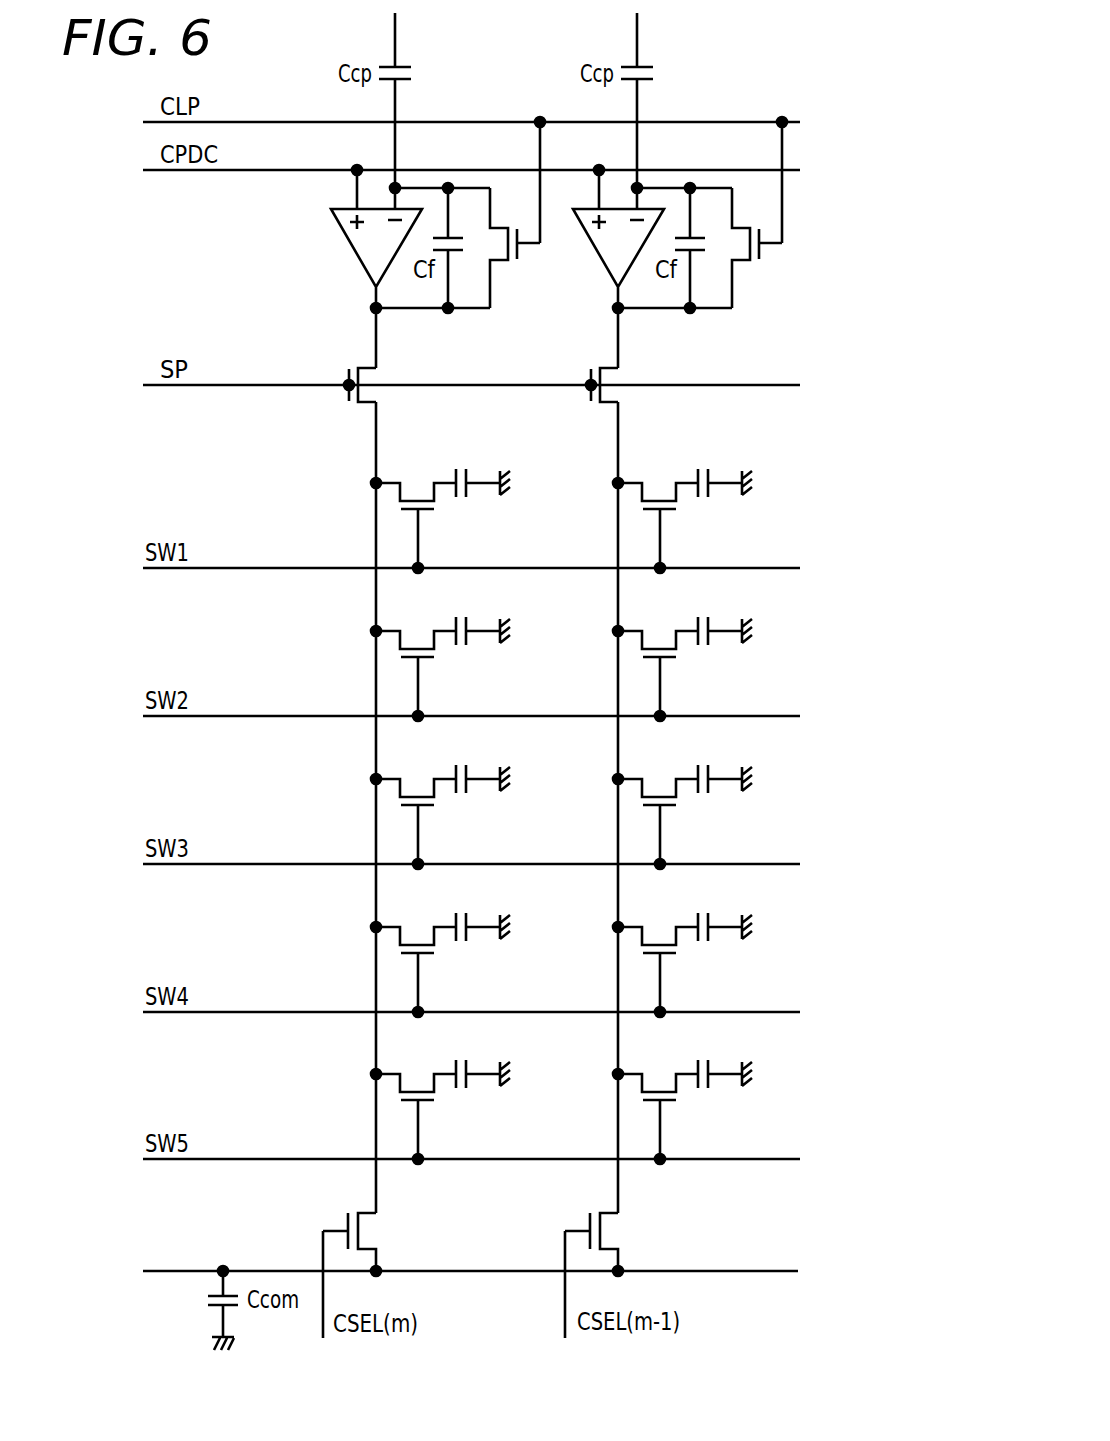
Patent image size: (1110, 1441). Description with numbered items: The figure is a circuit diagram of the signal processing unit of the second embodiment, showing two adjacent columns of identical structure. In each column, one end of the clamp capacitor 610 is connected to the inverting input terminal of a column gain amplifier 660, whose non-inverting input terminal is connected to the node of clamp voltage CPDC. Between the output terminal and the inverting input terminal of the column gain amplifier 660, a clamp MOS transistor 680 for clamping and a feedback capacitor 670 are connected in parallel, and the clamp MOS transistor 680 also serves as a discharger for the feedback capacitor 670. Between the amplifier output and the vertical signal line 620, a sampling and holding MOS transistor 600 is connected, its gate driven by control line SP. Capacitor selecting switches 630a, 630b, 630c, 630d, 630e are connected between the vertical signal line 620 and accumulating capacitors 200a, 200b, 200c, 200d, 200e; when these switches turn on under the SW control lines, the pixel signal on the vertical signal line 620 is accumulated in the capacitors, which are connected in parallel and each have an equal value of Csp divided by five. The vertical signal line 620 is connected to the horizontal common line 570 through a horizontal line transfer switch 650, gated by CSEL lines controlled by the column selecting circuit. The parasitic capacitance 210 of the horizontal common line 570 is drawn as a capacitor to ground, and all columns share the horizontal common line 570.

The clamp capacitor 610 is at (412, 73).
The column gain amplifier 660 is at (351, 246).
The feedback capacitor 670 is at (462, 252).
The clamp MOS transistor 680 is at (517, 228).
The sampling and holding MOS transistor 600 is at (372, 378).
The vertical signal line 620 is at (375, 540).
The capacitor selecting switch 630a is at (420, 494).
The capacitor selecting switch 630b is at (420, 642).
The capacitor selecting switch 630c is at (420, 790).
The capacitor selecting switch 630d is at (420, 938).
The capacitor selecting switch 630e is at (420, 1085).
The accumulating capacitor 200a is at (462, 470).
The accumulating capacitor 200b is at (462, 617).
The accumulating capacitor 200c is at (462, 765).
The accumulating capacitor 200d is at (462, 913).
The accumulating capacitor 200e is at (462, 1060).
The horizontal line transfer switch 650 is at (368, 1229).
The horizontal common line 570 is at (190, 1270).
The parasitic capacitance 210 is at (205, 1301).